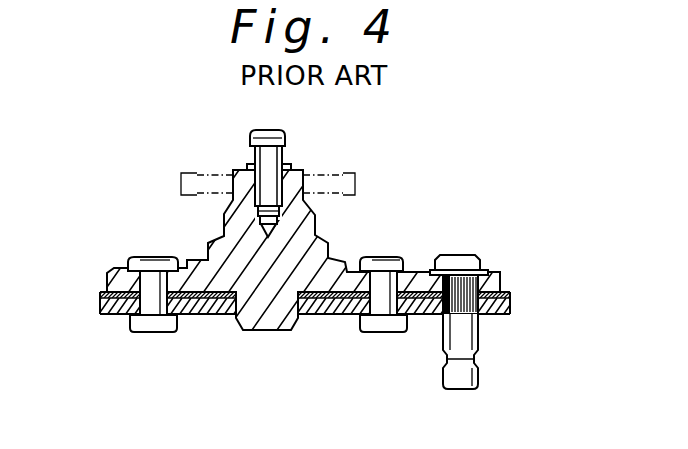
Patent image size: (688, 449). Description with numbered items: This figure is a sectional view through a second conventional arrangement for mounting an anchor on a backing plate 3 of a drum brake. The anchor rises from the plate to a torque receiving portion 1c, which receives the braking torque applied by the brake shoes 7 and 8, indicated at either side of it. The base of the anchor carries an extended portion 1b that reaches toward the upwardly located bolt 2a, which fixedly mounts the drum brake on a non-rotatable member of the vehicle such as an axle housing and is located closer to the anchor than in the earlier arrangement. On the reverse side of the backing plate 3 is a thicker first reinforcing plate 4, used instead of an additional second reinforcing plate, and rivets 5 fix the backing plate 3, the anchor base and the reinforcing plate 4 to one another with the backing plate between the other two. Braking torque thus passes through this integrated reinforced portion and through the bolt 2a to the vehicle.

The extended portion 1b is at (416, 271).
The torque receiving portion 1c is at (239, 170).
The bolt 2a is at (456, 256).
The backing plate 3 is at (509, 293).
The first reinforcing plate 4 is at (512, 310).
The rivet 5 is at (152, 312).
The brake shoe 7 is at (196, 175).
The brake shoe 8 is at (349, 175).